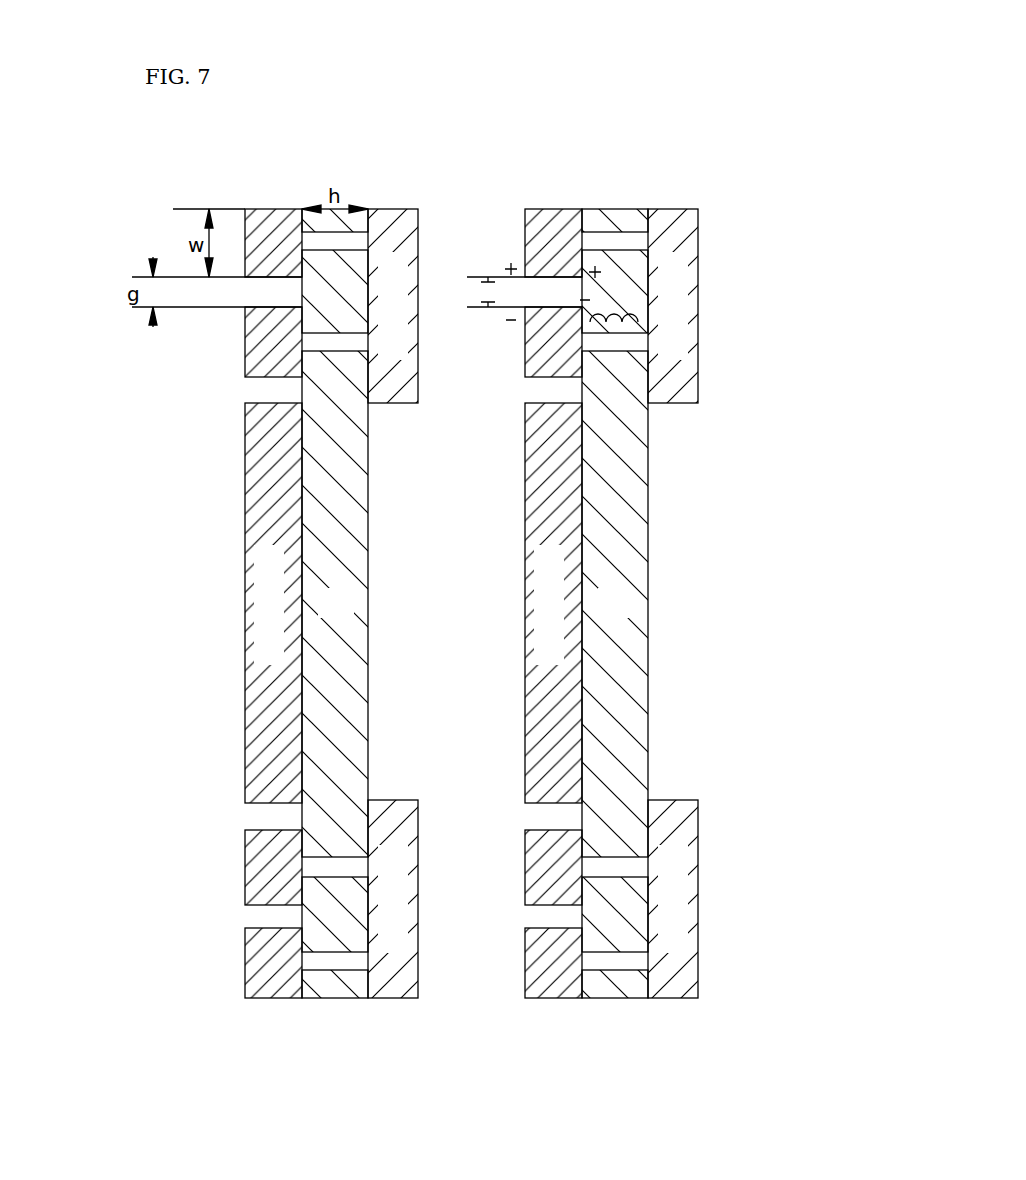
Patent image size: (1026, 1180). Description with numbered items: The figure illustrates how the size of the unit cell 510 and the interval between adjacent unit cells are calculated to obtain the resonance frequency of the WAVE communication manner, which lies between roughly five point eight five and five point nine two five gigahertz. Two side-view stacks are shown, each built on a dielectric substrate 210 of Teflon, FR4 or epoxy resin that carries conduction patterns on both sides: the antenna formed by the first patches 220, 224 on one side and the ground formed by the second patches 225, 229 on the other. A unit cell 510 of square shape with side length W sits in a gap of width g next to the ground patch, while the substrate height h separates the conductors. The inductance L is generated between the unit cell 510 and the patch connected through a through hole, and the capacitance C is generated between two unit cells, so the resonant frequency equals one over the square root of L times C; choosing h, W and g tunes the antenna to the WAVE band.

The dielectric substrate 210 is at (615, 209).
The unit cell 510 is at (556, 209).
The first patch 220 is at (300, 603).
The first patch 224 is at (245, 597).
The second patch 225 is at (642, 603).
The second patch 229 is at (700, 302).